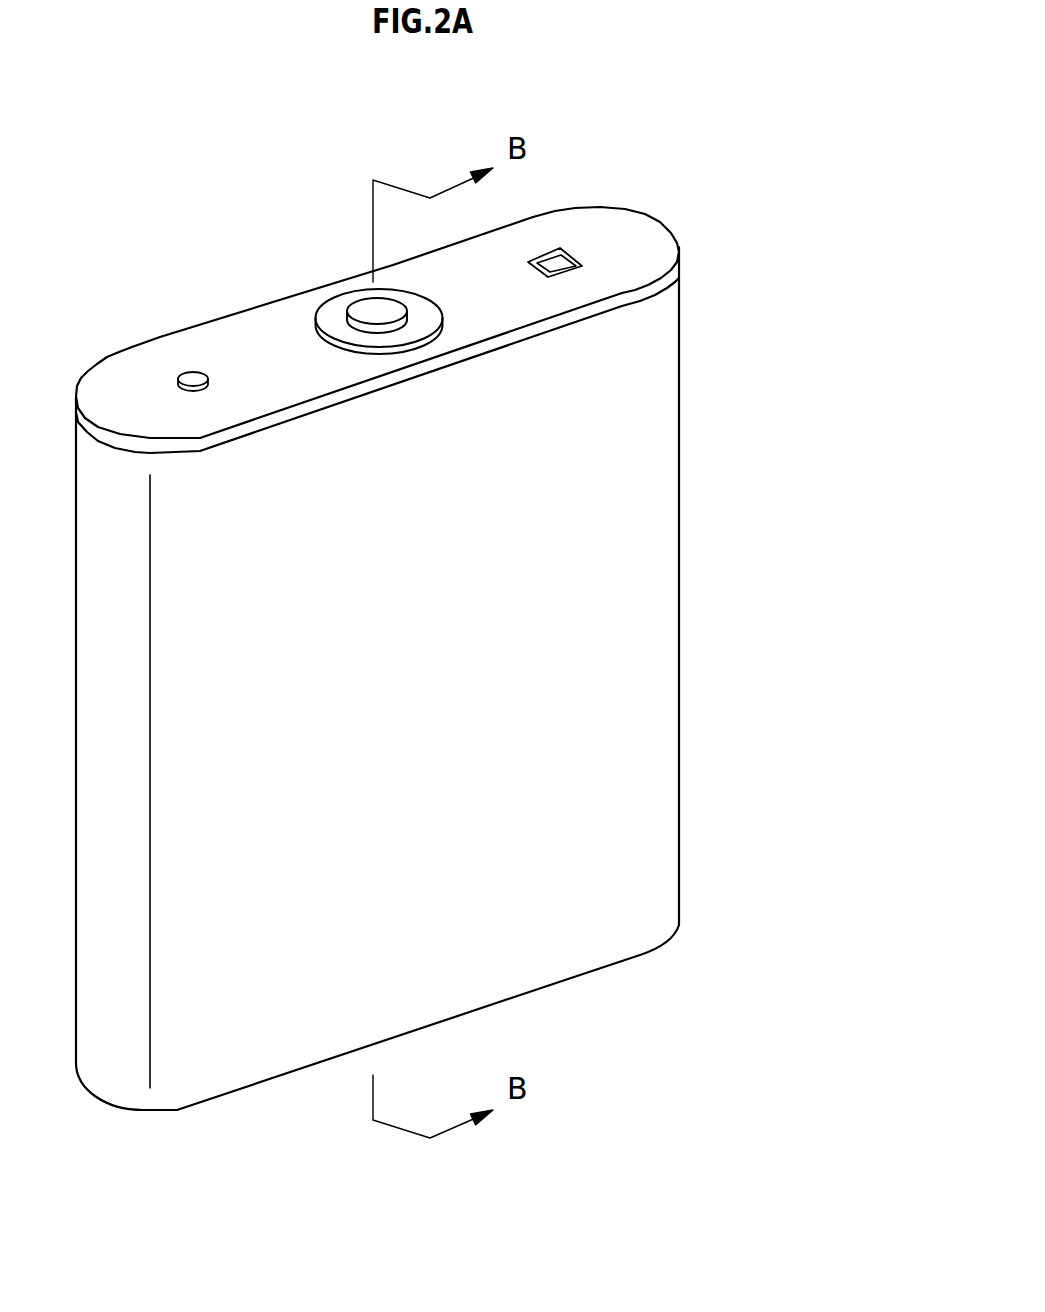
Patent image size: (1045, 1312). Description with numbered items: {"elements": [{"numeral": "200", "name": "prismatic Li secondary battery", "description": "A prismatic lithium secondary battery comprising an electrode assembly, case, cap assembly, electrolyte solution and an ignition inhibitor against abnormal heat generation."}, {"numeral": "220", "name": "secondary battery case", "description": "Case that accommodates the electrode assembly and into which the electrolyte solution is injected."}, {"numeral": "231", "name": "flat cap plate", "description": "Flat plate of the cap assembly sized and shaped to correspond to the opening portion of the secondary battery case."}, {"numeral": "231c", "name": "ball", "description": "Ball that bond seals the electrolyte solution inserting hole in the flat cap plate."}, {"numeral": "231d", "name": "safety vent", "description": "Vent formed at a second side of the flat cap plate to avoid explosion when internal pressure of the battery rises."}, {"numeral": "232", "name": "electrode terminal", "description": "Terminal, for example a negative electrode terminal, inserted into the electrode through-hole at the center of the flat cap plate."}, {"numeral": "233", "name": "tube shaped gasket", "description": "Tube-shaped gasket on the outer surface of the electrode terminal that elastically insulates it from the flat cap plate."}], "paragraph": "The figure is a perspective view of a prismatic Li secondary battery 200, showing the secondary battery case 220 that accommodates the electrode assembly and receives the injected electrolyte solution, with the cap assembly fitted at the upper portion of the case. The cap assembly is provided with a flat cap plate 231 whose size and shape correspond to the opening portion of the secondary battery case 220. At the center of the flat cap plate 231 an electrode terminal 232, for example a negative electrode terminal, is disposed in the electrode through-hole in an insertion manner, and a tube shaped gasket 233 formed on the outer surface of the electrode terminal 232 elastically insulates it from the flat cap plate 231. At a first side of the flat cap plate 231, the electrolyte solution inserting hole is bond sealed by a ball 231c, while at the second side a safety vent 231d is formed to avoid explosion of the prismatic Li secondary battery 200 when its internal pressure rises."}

The secondary battery 200 is at (806, 272).
The can 220 is at (635, 565).
The cap plate 231 is at (613, 240).
The electrolyte injection hole plug 231c is at (191, 381).
The safety vent 231d is at (551, 268).
The electrode terminal 232 is at (372, 308).
The insulating gasket 233 is at (338, 307).